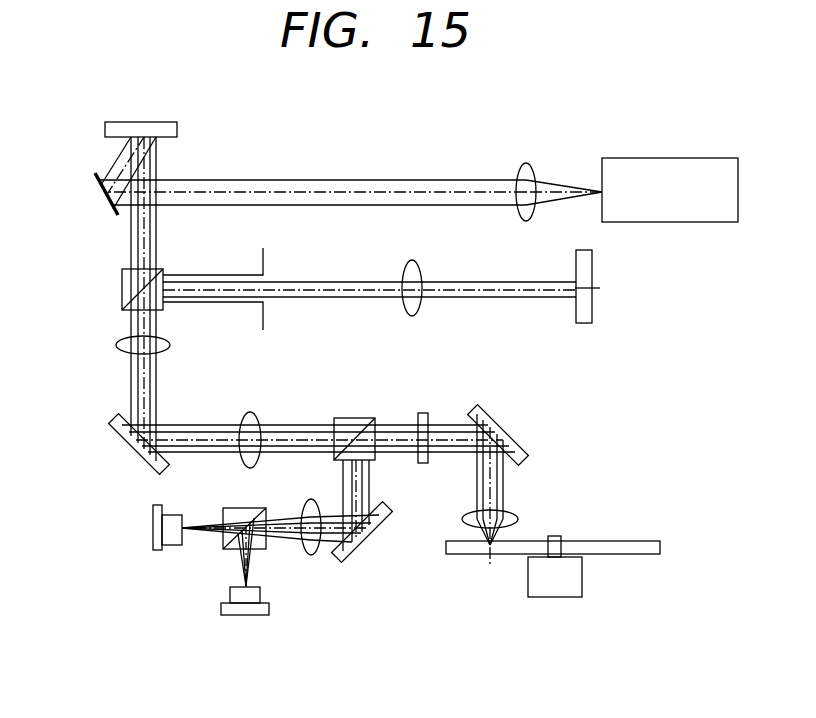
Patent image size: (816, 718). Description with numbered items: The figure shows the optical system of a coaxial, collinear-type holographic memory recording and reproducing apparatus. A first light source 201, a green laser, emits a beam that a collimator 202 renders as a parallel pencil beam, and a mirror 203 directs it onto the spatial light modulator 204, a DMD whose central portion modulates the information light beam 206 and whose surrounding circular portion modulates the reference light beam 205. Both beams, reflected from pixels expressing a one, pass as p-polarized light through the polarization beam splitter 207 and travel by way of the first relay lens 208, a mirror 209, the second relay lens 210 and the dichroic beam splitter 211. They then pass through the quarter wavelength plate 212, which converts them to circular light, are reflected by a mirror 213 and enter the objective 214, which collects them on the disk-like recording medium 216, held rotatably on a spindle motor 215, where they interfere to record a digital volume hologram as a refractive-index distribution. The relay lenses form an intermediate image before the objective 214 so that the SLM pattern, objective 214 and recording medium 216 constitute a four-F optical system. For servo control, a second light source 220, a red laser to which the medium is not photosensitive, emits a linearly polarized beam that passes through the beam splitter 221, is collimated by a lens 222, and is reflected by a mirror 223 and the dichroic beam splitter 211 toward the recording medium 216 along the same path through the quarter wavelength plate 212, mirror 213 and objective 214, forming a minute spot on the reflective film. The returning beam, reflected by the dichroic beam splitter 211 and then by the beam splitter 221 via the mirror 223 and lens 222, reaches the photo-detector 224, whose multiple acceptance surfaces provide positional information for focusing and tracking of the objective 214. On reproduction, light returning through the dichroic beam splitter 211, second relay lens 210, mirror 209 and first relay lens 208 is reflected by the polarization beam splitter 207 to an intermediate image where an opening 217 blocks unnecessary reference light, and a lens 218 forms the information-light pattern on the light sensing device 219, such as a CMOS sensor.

The first light source 201 is at (688, 158).
The collimator 202 is at (526, 163).
The mirror 203 is at (100, 190).
The spatial light modulator 204 is at (140, 122).
The reference light beam 205 is at (157, 238).
The information light beam 206 is at (131, 243).
The polarization beam splitter 207 is at (122, 290).
The first relay lens 208 is at (118, 345).
The mirror 209 is at (122, 442).
The second relay lens 210 is at (252, 412).
The dichroic beam splitter 211 is at (350, 418).
The quarter wavelength plate 212 is at (423, 413).
The mirror 213 is at (498, 412).
The objective 214 is at (518, 515).
The spindle motor 215 is at (554, 598).
The recording medium 216 is at (632, 555).
The opening 217 is at (266, 316).
The lens 218 is at (420, 260).
The light sensing device 219 is at (594, 312).
The second light source 220 is at (152, 527).
The beam splitter 221 is at (226, 508).
The lens 222 is at (311, 556).
The mirror 223 is at (370, 556).
The photo-detector 224 is at (245, 616).